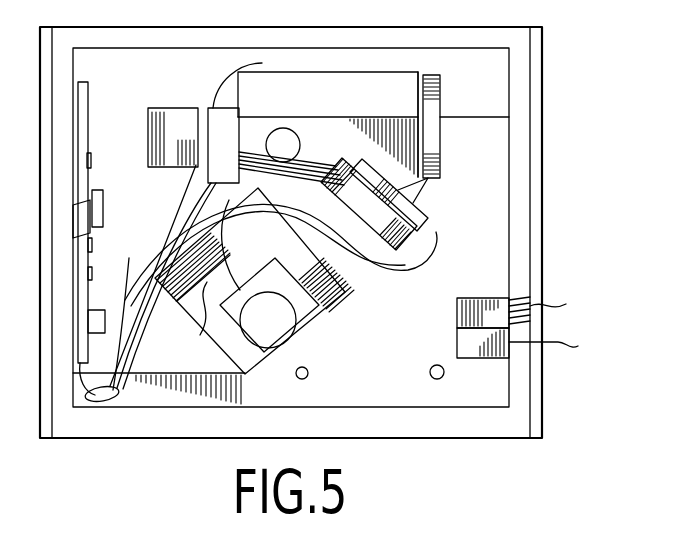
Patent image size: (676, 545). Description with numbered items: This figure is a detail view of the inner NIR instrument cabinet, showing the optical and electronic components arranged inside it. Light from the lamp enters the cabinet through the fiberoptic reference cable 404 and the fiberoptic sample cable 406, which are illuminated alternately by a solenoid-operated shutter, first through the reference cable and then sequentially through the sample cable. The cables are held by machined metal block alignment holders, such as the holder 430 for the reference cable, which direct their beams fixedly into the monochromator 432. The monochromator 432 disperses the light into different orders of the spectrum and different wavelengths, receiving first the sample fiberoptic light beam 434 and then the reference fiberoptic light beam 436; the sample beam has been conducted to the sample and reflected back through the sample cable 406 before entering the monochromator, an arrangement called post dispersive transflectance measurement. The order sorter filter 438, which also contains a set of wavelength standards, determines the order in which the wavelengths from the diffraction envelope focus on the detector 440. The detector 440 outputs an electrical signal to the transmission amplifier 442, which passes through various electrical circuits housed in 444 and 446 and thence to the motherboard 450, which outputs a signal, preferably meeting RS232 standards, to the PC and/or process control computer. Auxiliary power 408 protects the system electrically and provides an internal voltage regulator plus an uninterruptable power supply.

The fiberoptic reference cable 404 is at (568, 349).
The fiberoptic sample cable 406 is at (560, 306).
The auxiliary power 408 is at (478, 297).
The machined metal block alignment holder 430 is at (480, 347).
The monochromator 432 is at (247, 281).
The sample fiberoptic light beam 434 is at (284, 311).
The reference fiberoptic light beam 436 is at (344, 383).
The order sorter filter 438 is at (423, 206).
The detector 440 is at (440, 133).
The transmission amplifier 442 is at (395, 108).
The electrical circuit housing 444 is at (250, 128).
The electrical circuit housing 446 is at (172, 120).
The motherboard 450 is at (88, 146).